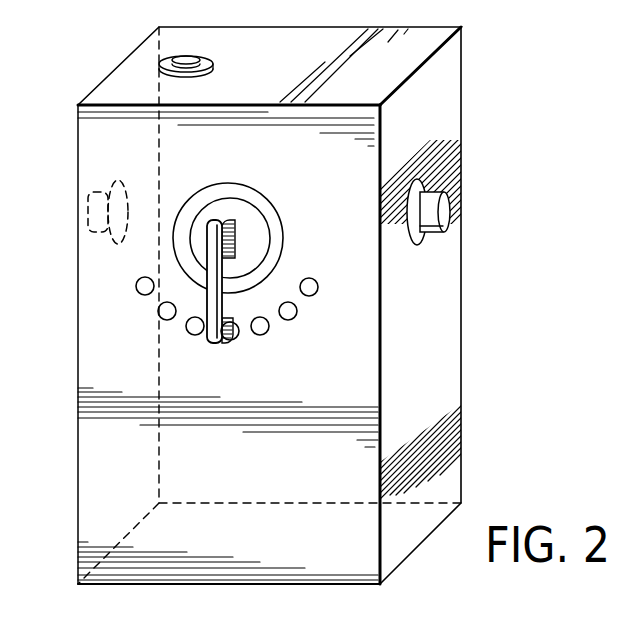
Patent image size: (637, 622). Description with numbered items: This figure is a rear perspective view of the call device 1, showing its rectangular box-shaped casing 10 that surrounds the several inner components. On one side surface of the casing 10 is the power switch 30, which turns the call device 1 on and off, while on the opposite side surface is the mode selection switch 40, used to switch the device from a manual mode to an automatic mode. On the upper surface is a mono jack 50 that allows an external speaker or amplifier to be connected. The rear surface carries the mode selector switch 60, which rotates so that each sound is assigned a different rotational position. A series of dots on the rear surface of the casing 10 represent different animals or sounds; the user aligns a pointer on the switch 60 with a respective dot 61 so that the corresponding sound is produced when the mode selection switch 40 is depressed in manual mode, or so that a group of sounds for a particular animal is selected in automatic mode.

The call device 1 is at (78, 42).
The casing 10 is at (450, 72).
The power switch 30 is at (88, 218).
The mode selection switch 40 is at (449, 197).
The mono jack 50 is at (198, 60).
The mode selector switch 60 is at (243, 220).
The dot 61 is at (268, 331).